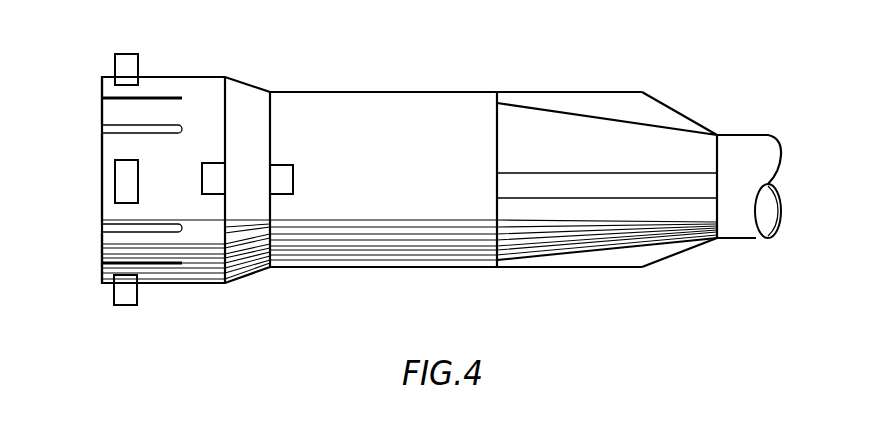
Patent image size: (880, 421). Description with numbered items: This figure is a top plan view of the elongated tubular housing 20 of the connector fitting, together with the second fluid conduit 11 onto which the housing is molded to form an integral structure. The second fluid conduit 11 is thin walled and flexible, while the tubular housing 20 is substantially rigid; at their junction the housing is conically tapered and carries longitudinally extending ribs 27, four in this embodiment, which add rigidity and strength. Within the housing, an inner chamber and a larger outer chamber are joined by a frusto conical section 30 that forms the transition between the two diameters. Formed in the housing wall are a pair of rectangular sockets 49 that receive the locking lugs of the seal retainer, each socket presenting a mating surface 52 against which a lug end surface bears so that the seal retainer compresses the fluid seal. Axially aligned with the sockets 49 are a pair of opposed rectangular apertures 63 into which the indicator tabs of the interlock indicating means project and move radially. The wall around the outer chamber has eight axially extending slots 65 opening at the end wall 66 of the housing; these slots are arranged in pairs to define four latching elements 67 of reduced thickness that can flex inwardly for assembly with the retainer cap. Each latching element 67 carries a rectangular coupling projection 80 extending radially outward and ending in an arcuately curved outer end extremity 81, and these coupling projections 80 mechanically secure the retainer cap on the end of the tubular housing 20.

The second fluid conduit 11 is at (753, 146).
The tubular housing 20 is at (476, 86).
The longitudinally extending ribs 27 is at (672, 120).
The frusto conical section 30 is at (250, 85).
The sockets 49 is at (294, 174).
The mating surface 52 is at (282, 172).
The apertures 63 is at (221, 180).
The axially extending slots 65 is at (102, 262).
The end wall 66 is at (103, 110).
The latching elements 67 is at (108, 79).
The coupling projections 80 is at (133, 65).
The arcuately curved outer end extremity 81 is at (127, 306).